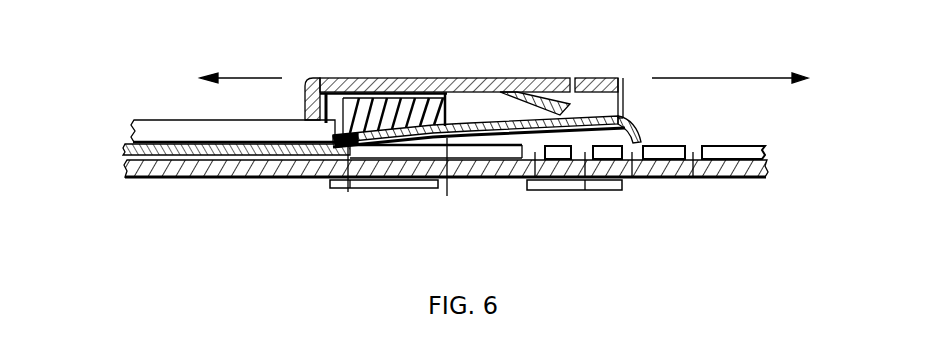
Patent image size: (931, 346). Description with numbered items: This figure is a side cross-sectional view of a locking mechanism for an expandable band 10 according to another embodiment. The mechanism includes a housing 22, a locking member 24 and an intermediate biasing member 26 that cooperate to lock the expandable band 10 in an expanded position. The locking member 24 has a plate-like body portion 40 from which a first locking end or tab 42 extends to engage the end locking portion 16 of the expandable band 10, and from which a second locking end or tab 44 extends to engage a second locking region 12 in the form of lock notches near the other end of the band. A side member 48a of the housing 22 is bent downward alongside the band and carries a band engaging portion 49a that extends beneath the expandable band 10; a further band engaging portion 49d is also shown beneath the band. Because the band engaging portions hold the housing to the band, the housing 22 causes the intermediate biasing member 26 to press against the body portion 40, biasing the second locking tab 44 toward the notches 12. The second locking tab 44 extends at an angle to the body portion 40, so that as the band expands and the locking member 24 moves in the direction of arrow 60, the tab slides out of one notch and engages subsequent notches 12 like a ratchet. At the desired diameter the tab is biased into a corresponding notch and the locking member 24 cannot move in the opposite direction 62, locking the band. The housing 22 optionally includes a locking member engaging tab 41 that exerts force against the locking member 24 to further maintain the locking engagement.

The expandable band 10 is at (158, 118).
The second locking region 12 is at (585, 178).
The end locking portion 16 is at (343, 78).
The housing 22 is at (598, 68).
The locking member 24 is at (470, 106).
The intermediate biasing member 26 is at (395, 92).
The body portion 40 is at (447, 196).
The locking member engaging tab 41 is at (540, 78).
The first locking end 42 is at (348, 192).
The second locking end 44 is at (634, 131).
The side member 48a is at (610, 105).
The band engaging portion 49a is at (598, 191).
The plate 49d is at (370, 189).
The arrow 60 is at (237, 78).
The opposite direction 62 is at (733, 78).